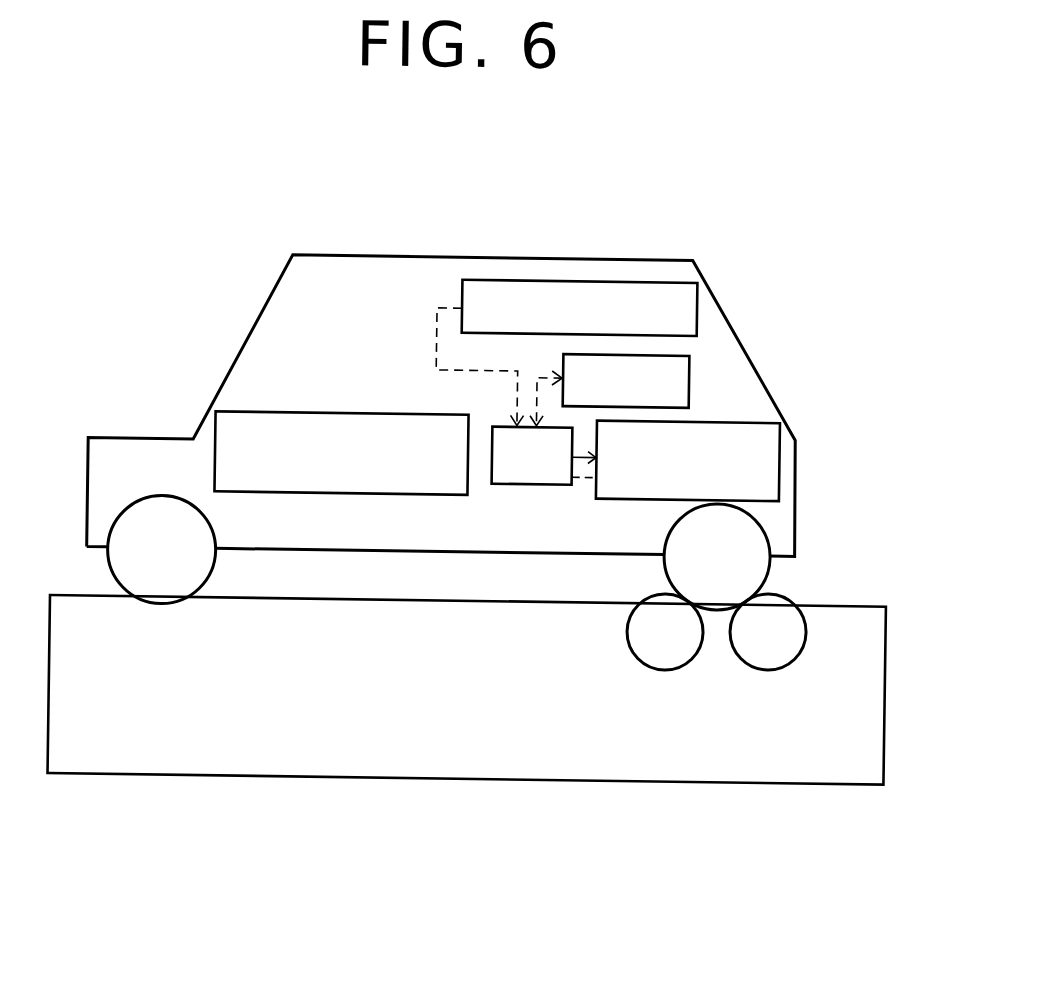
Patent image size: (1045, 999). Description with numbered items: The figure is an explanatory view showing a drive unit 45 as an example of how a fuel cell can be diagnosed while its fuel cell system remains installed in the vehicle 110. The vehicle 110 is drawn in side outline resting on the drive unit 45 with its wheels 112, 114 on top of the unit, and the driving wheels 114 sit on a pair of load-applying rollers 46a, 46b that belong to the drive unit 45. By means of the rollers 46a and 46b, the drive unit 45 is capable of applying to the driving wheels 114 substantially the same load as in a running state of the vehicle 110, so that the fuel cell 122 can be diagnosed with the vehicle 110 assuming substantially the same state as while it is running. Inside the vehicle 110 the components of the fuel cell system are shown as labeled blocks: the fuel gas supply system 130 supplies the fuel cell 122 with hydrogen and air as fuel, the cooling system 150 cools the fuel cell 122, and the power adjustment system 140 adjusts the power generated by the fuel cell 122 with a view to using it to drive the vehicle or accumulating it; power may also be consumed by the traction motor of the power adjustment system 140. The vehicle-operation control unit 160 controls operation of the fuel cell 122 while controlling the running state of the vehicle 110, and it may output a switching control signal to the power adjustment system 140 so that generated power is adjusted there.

The vehicle 110 is at (487, 252).
The front wheel 112 is at (213, 573).
The driving wheels 114 is at (667, 568).
The fuel cell 122 is at (496, 422).
The fuel gas supply system 130 is at (694, 304).
The power adjustment system 140 is at (778, 443).
The cooling system 150 is at (686, 371).
The vehicle-operation control unit 160 is at (296, 410).
The drive unit 45 is at (452, 773).
The load-applying roller 46a is at (664, 662).
The load-applying roller 46b is at (766, 661).